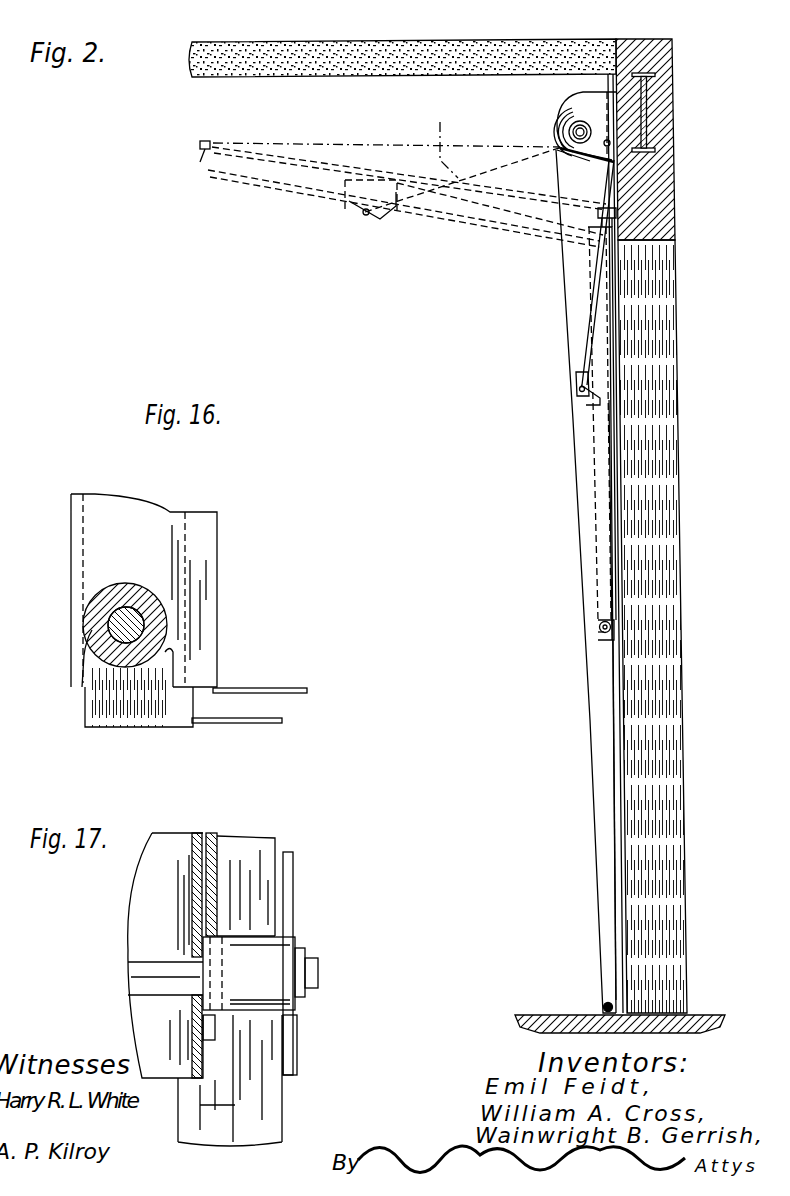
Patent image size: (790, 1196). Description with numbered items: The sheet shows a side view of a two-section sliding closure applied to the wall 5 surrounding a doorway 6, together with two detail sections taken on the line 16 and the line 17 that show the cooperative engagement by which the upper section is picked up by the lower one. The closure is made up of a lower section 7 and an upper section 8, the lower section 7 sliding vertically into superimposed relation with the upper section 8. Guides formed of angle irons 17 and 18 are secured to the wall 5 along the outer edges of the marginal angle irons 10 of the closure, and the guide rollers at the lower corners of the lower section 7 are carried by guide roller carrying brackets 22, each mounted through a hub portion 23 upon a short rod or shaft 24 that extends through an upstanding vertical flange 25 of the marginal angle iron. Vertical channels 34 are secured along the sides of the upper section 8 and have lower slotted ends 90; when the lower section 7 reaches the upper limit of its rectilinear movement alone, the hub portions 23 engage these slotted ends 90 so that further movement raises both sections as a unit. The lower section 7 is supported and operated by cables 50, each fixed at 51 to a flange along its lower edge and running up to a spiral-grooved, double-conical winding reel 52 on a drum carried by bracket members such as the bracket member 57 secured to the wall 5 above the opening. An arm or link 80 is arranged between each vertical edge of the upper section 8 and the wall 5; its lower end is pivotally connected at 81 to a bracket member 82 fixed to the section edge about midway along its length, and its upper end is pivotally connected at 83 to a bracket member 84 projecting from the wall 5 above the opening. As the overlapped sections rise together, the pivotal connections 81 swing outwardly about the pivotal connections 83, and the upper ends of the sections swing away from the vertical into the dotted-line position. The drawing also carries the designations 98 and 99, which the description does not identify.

In FIG. 2, the wall 5 is at (668, 192).
In FIG. 2, the doorway 6 is at (665, 296).
In FIG. 2, the lower section 7 is at (613, 738).
In FIG. 2, the upper section 8 is at (615, 524).
In FIG. 17, the angle irons 10 is at (196, 1160).
In FIG. 17, the section line 16 is at (220, 840).
In FIG. 16, the angle iron 17 is at (148, 543).
In FIG. 17, the angle iron 17 is at (265, 1050).
In FIG. 17, the angle iron 18 is at (235, 1088).
In FIG. 17, the guide roller carrying bracket 22 is at (293, 880).
In FIG. 2, the hub portion 23 is at (603, 640).
In FIG. 16, the hub portion 23 is at (105, 612).
In FIG. 17, the hub portion 23 is at (275, 960).
In FIG. 2, the short rod or shaft 24 is at (600, 632).
In FIG. 16, the short rod or shaft 24 is at (92, 642).
In FIG. 17, the short rod or shaft 24 is at (155, 990).
In FIG. 17, the upstanding vertical flange 25 is at (200, 930).
In FIG. 2, the vertical channel 34 is at (611, 466).
In FIG. 16, the vertical channel 34 is at (100, 566).
In FIG. 17, the vertical channel 34 is at (215, 870).
In FIG. 2, the cable 50 is at (590, 800).
In FIG. 2, the cable fixing point 51 is at (602, 1008).
In FIG. 2, the winding reel 52 is at (558, 142).
In FIG. 2, the bracket member 57 is at (568, 124).
In FIG. 2, the arm or link 80 is at (632, 326).
In FIG. 2, the pivotal connection 81 is at (577, 384).
In FIG. 2, the bracket member 82 is at (596, 393).
In FIG. 2, the pivotal connection 83 is at (583, 108).
In FIG. 2, the bracket member 84 is at (622, 42).
In FIG. 2, the lower slotted end 90 is at (610, 624).
In FIG. 16, the lower slotted end 90 is at (92, 650).
In FIG. 2, the hook 98 is at (200, 150).
In FIG. 2, the bracket 99 is at (605, 212).